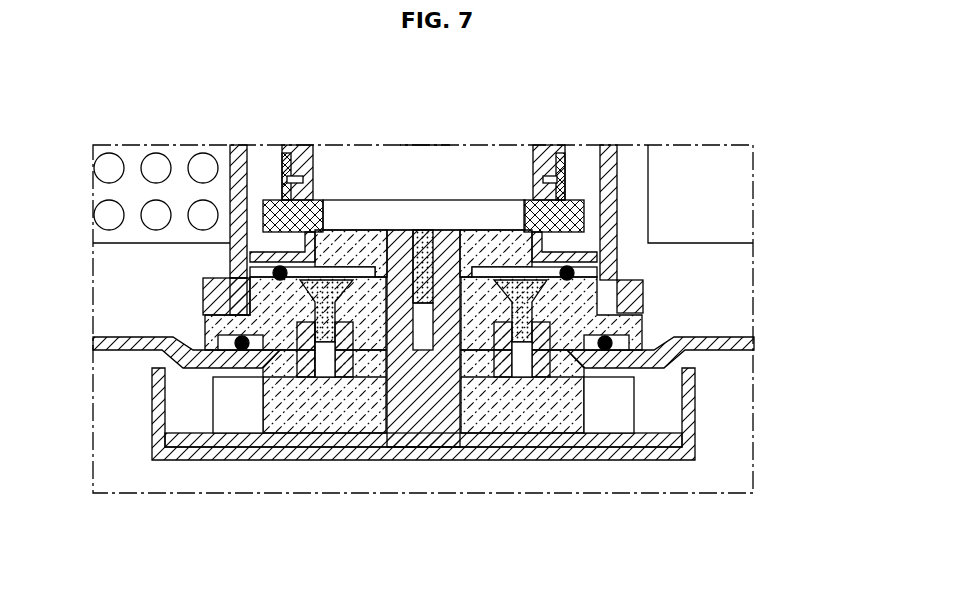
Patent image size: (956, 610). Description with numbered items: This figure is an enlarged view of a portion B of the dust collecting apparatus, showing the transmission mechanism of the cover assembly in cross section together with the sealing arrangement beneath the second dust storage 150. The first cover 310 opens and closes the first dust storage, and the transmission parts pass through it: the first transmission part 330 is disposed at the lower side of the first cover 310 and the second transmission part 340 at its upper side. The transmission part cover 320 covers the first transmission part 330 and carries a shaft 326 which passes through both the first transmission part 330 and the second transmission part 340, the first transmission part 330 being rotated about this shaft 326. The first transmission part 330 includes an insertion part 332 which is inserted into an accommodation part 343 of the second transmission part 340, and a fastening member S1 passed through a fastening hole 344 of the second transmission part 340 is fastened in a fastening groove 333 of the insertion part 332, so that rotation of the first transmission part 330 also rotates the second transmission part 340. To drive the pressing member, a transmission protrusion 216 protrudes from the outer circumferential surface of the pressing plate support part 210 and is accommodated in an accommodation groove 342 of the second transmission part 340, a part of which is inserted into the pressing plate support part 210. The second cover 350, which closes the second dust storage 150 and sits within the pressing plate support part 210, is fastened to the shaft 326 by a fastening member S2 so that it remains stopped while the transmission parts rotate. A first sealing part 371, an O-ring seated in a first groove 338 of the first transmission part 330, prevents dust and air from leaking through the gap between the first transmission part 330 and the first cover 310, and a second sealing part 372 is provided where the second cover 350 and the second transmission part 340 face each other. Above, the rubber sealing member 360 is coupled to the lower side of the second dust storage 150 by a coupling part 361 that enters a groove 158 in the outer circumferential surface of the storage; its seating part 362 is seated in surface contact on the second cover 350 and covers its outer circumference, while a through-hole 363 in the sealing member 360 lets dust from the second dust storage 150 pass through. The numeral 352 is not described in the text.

The pressing plate support part 210 is at (239, 145).
The transmission protrusion 216 is at (248, 300).
The accommodation groove 342 is at (235, 302).
The first groove 338 is at (643, 295).
The through-hole 363 is at (335, 200).
The second dust storage 150 is at (550, 147).
The coupling part 361 is at (560, 180).
The groove 158 is at (548, 178).
The sealing member 360 is at (585, 212).
The seating part 362 is at (597, 240).
The cap body 352 is at (508, 257).
The second sealing part 372 is at (572, 275).
The shaft 326 is at (423, 425).
The second cover 350 is at (457, 230).
The fastening member S2 is at (420, 230).
The portion B is at (425, 145).
The second transmission part 340 is at (265, 350).
The first sealing part 371 is at (643, 338).
The first transmission part 330 is at (487, 425).
The fastening hole 344 is at (293, 330).
The accommodation part 343 is at (352, 360).
The fastening groove 333 is at (520, 375).
The fastening member S1 is at (320, 345).
The insertion part 332 is at (608, 355).
The first cover 310 is at (750, 355).
The transmission part cover 320 is at (635, 452).